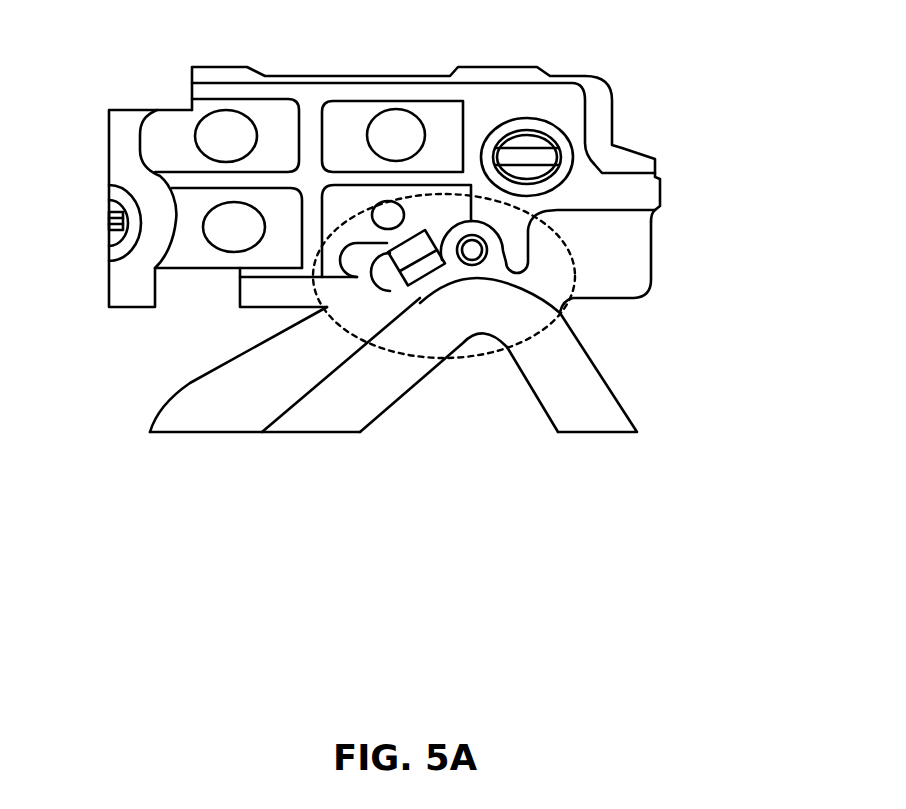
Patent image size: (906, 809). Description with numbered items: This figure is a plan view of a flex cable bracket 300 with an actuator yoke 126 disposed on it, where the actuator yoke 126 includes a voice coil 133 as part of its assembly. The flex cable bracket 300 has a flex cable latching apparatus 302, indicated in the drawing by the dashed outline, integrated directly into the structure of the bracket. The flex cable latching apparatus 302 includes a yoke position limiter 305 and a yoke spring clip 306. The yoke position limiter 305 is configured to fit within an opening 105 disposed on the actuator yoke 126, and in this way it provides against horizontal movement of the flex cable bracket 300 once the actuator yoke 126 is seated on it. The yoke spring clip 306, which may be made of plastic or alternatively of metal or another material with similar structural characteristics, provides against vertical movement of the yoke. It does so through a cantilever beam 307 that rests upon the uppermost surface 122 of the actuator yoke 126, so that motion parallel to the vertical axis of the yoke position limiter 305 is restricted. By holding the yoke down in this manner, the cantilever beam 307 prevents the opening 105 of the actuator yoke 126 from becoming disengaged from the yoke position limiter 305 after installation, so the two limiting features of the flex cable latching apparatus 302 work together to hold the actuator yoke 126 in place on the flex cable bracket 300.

The flex cable bracket 300 is at (424, 67).
The flex cable latching apparatus 302 is at (593, 302).
The yoke position limiter 305 is at (466, 253).
The opening 105 is at (487, 251).
The yoke spring clip 306 is at (417, 252).
The cantilever beam 307 is at (423, 270).
The surface 122 is at (410, 290).
The actuator yoke 126 is at (207, 372).
The voice coil 133 is at (583, 388).